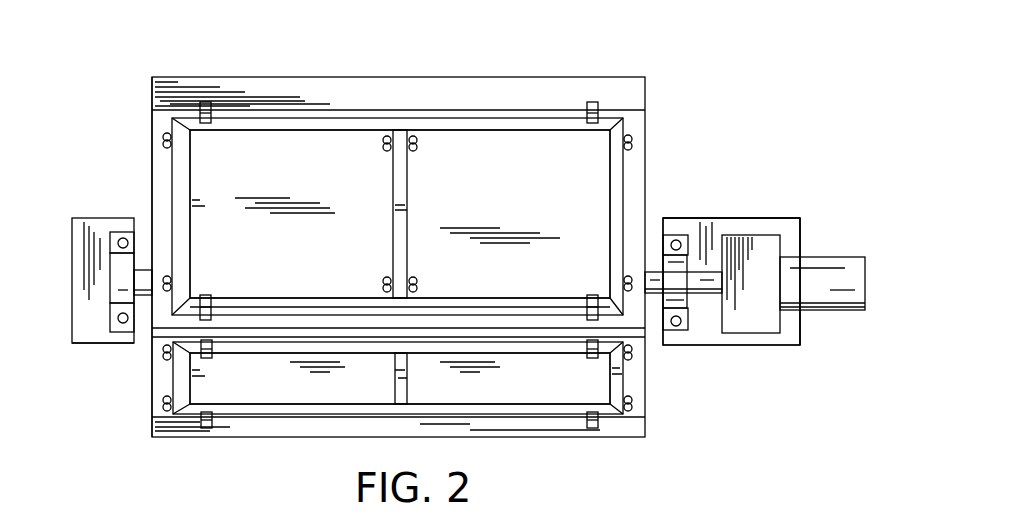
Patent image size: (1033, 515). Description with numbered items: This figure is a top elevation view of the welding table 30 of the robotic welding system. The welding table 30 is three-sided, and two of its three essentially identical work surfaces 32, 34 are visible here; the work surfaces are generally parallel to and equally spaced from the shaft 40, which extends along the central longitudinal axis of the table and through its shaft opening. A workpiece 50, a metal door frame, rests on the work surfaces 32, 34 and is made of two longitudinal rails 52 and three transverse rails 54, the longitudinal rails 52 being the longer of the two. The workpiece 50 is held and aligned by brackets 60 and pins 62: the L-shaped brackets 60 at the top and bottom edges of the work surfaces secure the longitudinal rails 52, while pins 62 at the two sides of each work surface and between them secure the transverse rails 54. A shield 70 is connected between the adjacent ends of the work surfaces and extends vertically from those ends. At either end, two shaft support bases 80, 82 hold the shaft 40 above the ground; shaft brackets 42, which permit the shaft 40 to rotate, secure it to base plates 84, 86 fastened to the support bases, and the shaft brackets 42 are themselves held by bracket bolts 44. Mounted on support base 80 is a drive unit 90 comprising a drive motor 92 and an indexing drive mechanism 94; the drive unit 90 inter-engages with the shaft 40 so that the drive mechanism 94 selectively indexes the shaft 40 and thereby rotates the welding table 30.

The welding table 30 is at (650, 146).
The work surface 32 is at (295, 390).
The work surface 34 is at (320, 153).
The shaft 40 is at (703, 290).
The shaft bracket 42 is at (118, 258).
The bracket bolt 44 is at (121, 240).
The workpiece 50 is at (262, 420).
The longitudinal rail 52 is at (488, 122).
The transverse rail 54 is at (185, 218).
The bracket 60 is at (205, 101).
The pin 62 is at (163, 136).
The shield 70 is at (420, 88).
The shaft support base 80 is at (782, 347).
The shaft support base 82 is at (80, 344).
The base plate 84 is at (790, 233).
The base plate 86 is at (93, 326).
The drive unit 90 is at (771, 218).
The drive motor 92 is at (838, 296).
The indexing drive mechanism 94 is at (750, 323).